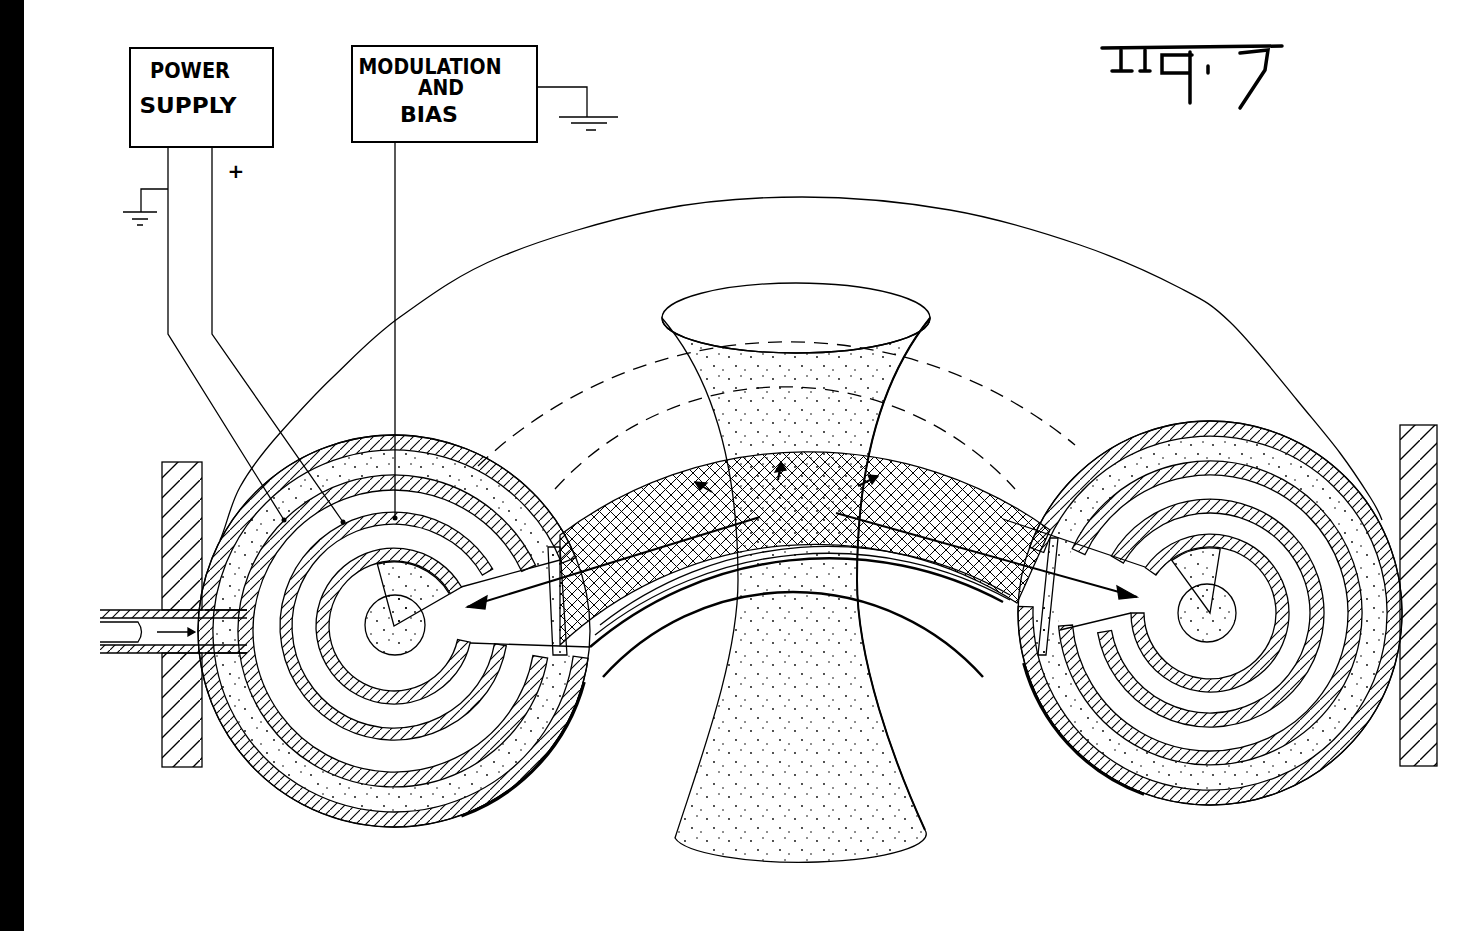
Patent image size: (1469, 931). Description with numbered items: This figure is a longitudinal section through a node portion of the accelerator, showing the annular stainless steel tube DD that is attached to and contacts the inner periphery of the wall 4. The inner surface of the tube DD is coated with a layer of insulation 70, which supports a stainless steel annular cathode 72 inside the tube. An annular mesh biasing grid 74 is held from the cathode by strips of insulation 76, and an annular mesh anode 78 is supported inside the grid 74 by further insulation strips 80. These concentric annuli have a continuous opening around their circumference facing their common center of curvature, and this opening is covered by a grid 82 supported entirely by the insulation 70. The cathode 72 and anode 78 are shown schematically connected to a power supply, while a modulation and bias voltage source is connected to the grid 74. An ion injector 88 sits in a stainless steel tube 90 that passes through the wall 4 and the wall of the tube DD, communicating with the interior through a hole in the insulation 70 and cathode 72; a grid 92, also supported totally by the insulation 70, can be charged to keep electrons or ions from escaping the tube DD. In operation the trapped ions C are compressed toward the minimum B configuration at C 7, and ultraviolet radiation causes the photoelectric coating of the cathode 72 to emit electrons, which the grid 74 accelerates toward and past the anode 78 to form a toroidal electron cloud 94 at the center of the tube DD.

The wall 4 is at (163, 500).
The layer of insulation 70 is at (335, 797).
The cathode 72 is at (377, 780).
The electrically biasing grid 74 is at (398, 737).
The strips of insulation 76 is at (575, 712).
The mesh anode 78 is at (457, 667).
The insulation strips 80 is at (798, 583).
The grid 82 is at (1013, 605).
The ion injector 88 is at (128, 622).
The stainless steel tube 90 is at (148, 655).
The grid 92 is at (223, 630).
The toroidal electron cloud 94 is at (392, 640).
The minimum B configuration location C7 7 is at (802, 535).
The ions C is at (698, 802).
The tube DD is at (1123, 265).